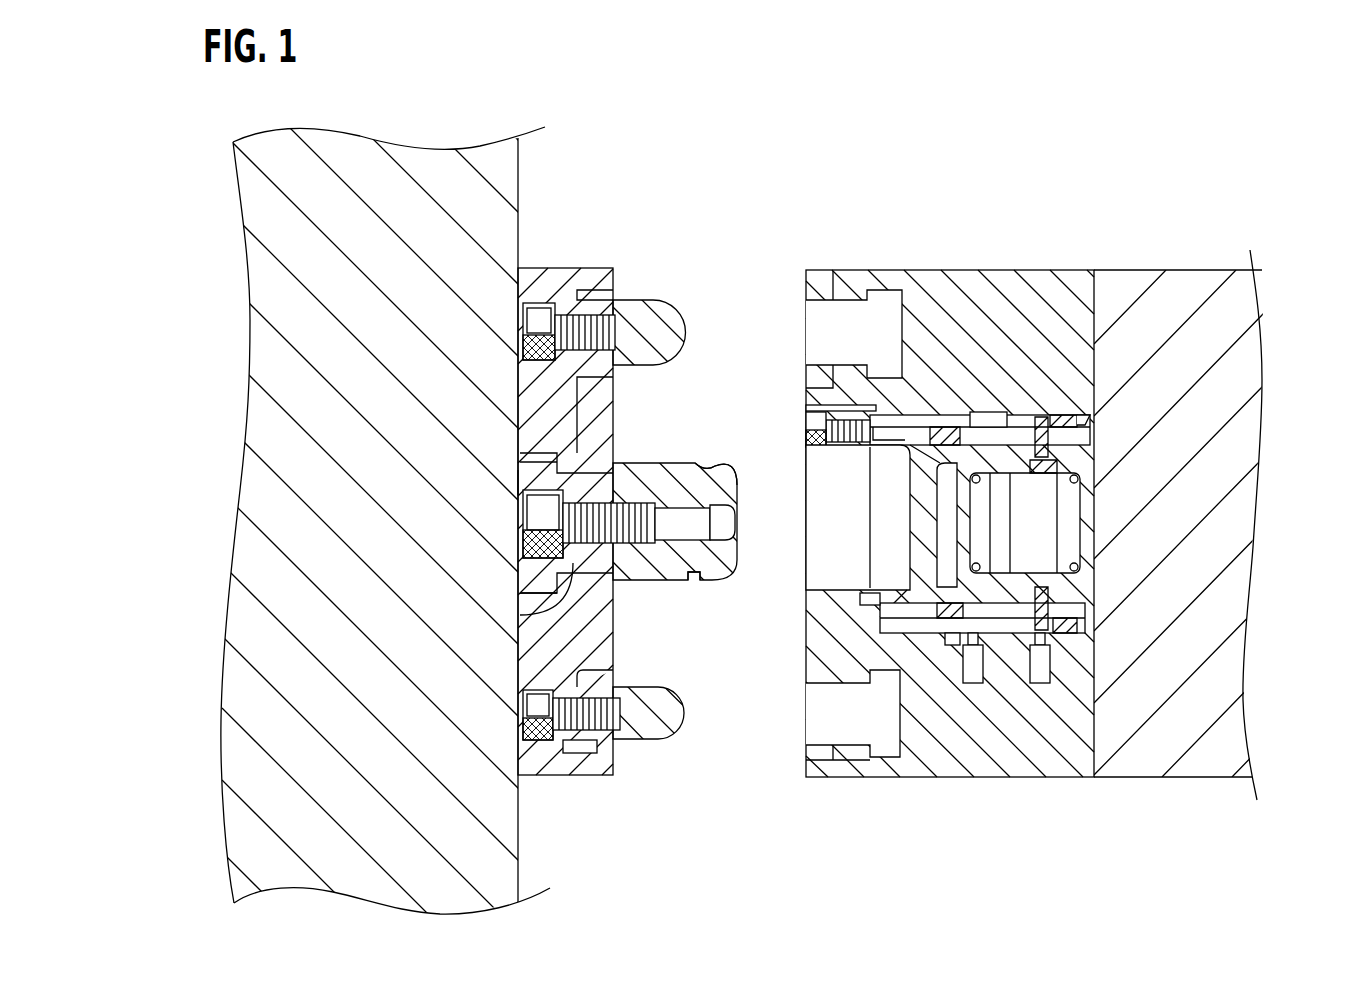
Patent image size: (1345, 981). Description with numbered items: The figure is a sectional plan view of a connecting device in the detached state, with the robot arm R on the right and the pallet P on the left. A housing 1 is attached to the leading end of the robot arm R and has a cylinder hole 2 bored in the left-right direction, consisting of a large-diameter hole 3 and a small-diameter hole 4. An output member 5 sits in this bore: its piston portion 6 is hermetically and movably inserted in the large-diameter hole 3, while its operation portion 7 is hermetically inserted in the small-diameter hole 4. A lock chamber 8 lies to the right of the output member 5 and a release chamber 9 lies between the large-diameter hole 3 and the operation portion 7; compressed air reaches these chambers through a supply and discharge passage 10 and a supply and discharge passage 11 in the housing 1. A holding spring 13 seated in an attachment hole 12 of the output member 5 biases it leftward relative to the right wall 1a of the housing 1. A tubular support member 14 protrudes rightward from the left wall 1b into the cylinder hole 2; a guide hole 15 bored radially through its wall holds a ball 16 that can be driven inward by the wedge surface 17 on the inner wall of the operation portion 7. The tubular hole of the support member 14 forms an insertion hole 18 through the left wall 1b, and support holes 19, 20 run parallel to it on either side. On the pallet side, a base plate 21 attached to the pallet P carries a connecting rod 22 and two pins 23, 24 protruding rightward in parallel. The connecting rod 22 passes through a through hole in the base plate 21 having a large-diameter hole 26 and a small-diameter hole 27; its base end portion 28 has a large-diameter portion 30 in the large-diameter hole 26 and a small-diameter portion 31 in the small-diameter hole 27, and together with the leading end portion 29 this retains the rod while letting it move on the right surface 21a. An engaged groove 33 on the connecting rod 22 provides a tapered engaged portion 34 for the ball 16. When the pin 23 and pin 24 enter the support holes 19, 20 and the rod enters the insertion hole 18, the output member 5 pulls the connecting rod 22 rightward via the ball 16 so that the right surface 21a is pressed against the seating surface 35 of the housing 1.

The pallet P is at (300, 300).
The robot arm R is at (1215, 312).
The housing 1 is at (1030, 535).
The right wall 1a is at (1073, 458).
The left wall 1b is at (843, 405).
The cylinder hole 2 is at (928, 427).
The large-diameter hole 3 is at (975, 410).
The small-diameter hole 4 is at (874, 423).
The output member 5 is at (1018, 413).
The piston portion 6 is at (1034, 416).
The operation portion 7 is at (905, 427).
The lock chamber 8 is at (1077, 612).
The release chamber 9 is at (957, 625).
The supply and discharge passage 10 is at (1038, 663).
The supply and discharge passage 11 is at (975, 655).
The attachment hole 12 is at (1015, 543).
The holding spring 13 is at (1078, 482).
The tubular support member 14 is at (812, 442).
The guide hole 15 is at (890, 587).
The ball 16 is at (890, 585).
The wedge surface 17 is at (917, 597).
The insertion hole 18 is at (878, 598).
The support hole 19 is at (848, 325).
The support hole 20 is at (853, 742).
The base plate 21 is at (569, 480).
The right surface 21a is at (613, 637).
The connecting rod 22 is at (630, 518).
The pin 23 is at (638, 312).
The pin 24 is at (640, 725).
The large-diameter hole 26 is at (540, 463).
The small-diameter hole 27 is at (577, 455).
The base end portion 28 is at (518, 483).
The leading end portion 29 is at (675, 478).
The large-diameter portion 30 is at (540, 575).
The small-diameter portion 31 is at (535, 615).
The engaged groove 33 is at (693, 583).
The engaged portion 34 is at (695, 583).
The seating surface 35 is at (875, 607).